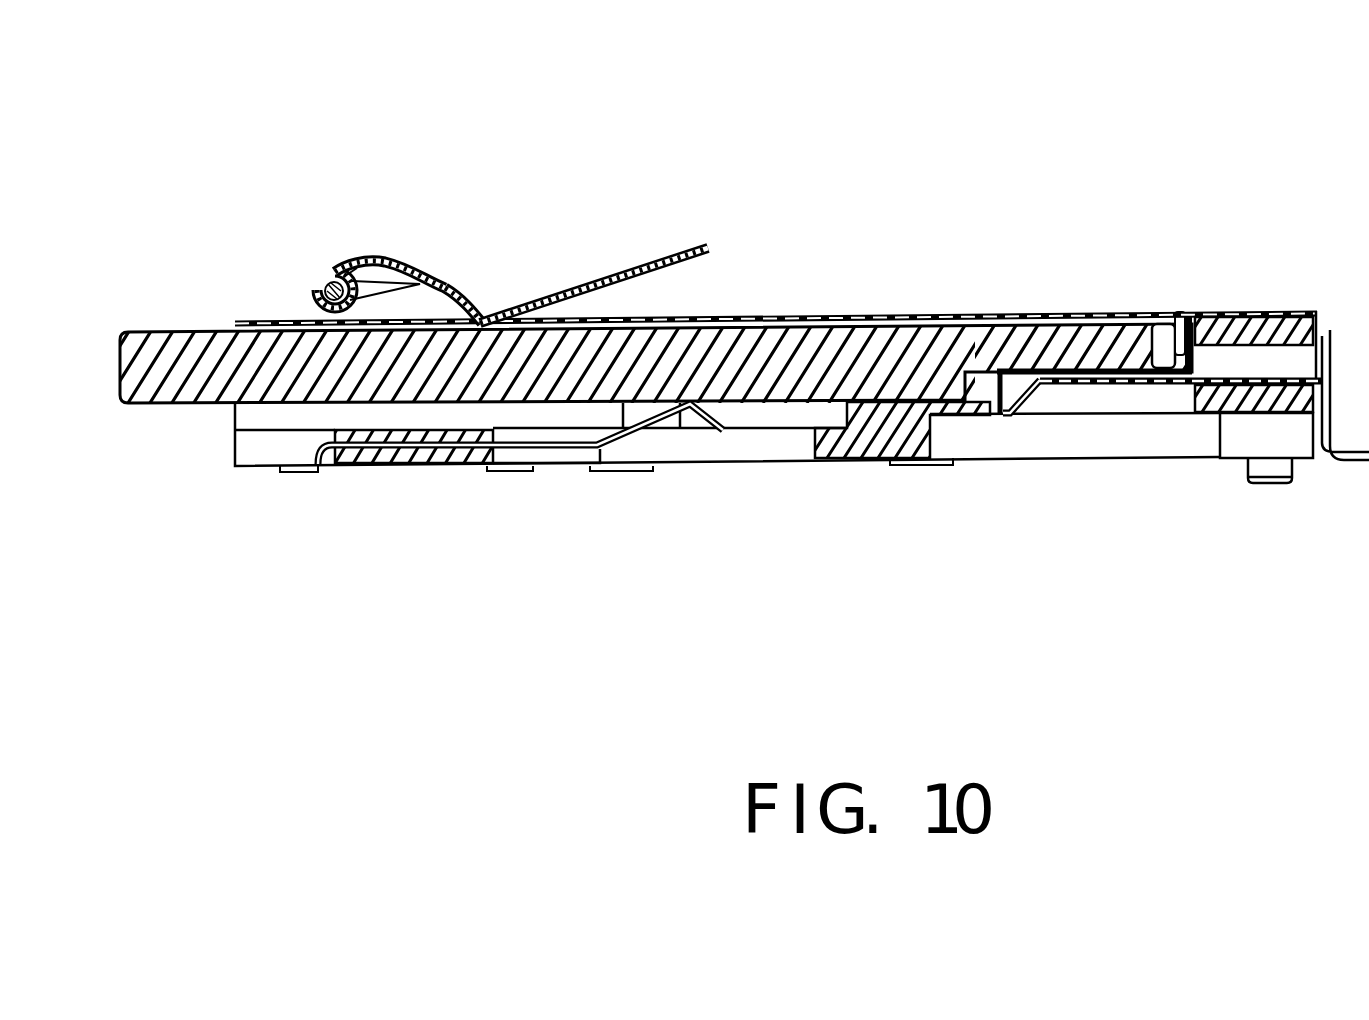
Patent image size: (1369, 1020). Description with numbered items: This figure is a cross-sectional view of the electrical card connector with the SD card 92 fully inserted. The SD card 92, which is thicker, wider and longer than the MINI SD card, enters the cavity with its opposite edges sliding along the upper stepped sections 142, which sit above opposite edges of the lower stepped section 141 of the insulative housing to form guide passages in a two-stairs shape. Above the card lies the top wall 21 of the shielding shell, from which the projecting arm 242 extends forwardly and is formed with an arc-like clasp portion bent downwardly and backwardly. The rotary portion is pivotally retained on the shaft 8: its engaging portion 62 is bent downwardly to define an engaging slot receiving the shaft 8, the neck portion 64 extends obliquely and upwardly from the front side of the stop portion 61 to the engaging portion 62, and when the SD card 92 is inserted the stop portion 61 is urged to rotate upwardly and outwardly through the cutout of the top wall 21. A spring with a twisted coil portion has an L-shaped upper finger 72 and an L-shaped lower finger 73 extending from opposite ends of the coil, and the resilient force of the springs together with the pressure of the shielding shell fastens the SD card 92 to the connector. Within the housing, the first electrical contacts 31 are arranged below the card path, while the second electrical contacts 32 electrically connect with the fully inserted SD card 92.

The shaft 8 is at (480, 194).
The top wall 21 is at (887, 313).
The first electrical contacts 31 is at (708, 430).
The second electrical contacts 32 is at (1040, 380).
The stop portion 61 is at (630, 267).
The engaging portion 62 is at (312, 298).
The neck portion 64 is at (480, 275).
The upper finger 72 is at (352, 258).
The lower finger 73 is at (386, 263).
The SD card 92 is at (199, 362).
The lower stepped section 141 is at (842, 403).
The upper stepped sections 142 is at (1018, 392).
The projecting arm 242 is at (428, 272).